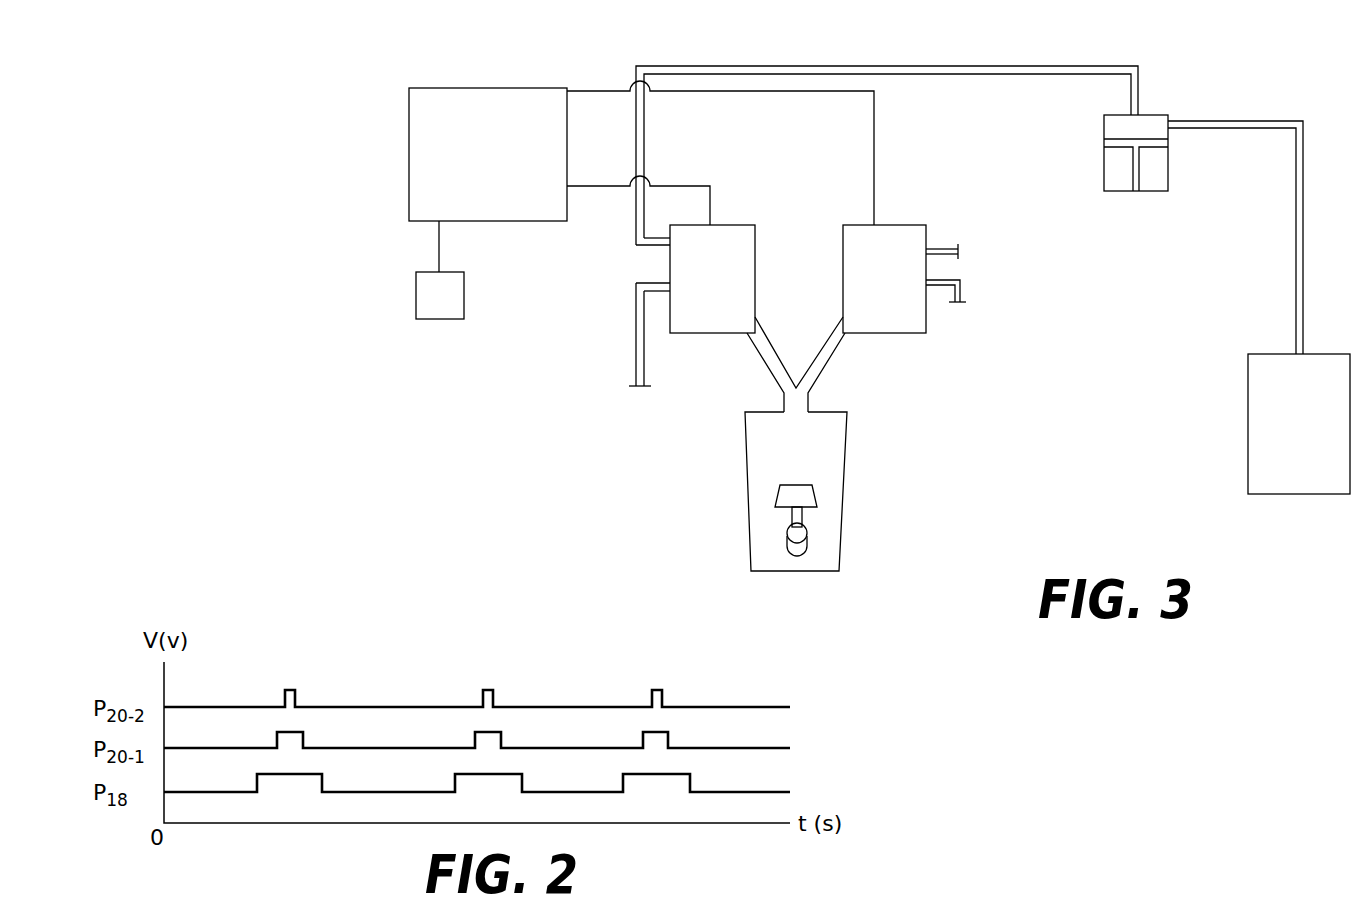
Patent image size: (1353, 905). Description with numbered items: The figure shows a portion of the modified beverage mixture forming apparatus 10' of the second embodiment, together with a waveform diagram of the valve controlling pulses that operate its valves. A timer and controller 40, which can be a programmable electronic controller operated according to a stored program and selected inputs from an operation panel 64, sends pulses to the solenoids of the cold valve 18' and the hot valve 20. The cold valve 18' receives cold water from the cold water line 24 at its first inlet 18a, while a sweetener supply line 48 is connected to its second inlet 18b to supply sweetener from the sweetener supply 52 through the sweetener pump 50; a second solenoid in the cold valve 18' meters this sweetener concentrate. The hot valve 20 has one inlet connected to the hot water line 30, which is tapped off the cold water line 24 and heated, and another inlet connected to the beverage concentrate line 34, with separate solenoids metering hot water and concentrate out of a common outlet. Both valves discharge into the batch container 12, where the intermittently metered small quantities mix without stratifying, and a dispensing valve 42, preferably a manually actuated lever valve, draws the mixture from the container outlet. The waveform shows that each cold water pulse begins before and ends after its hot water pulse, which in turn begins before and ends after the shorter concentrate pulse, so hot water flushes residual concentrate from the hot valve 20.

The modified apparatus 10' is at (341, 170).
The timer and controller 40 is at (452, 88).
The operation panel 64 is at (431, 313).
The sweetener supply line 48 is at (990, 75).
The first inlet of cold valve 18a is at (661, 244).
The second inlet of cold valve 18b is at (666, 291).
The cold water line 24 is at (645, 353).
The cold valve 18' is at (739, 252).
The hot valve 20 is at (893, 233).
The beverage concentrate line 34 is at (952, 252).
The hot water line 30 is at (949, 296).
The batch container 12 is at (753, 460).
The dispensing valve 42 is at (805, 498).
The sweetener pump 50 is at (1104, 129).
The sweetener supply 52 is at (1253, 369).